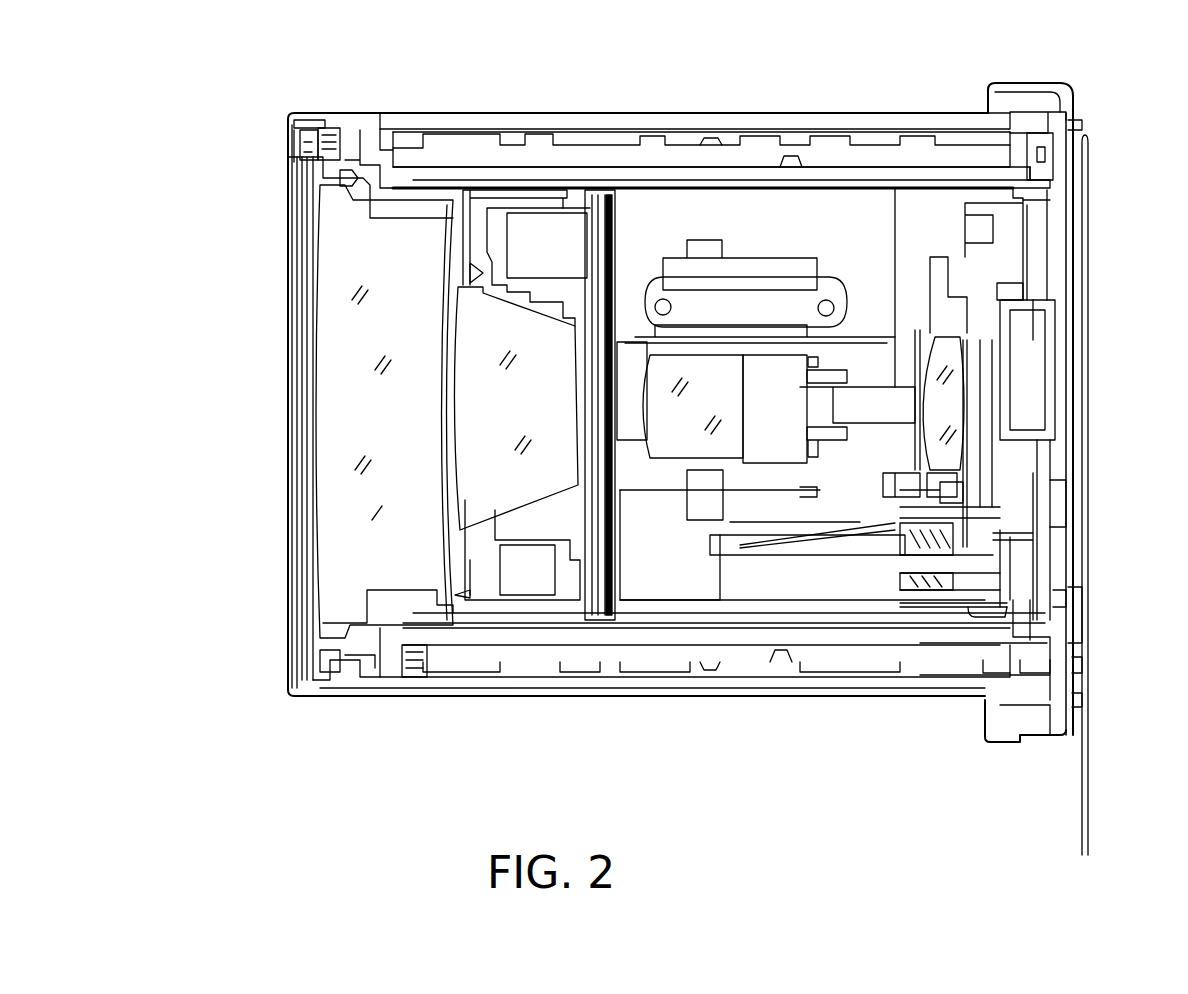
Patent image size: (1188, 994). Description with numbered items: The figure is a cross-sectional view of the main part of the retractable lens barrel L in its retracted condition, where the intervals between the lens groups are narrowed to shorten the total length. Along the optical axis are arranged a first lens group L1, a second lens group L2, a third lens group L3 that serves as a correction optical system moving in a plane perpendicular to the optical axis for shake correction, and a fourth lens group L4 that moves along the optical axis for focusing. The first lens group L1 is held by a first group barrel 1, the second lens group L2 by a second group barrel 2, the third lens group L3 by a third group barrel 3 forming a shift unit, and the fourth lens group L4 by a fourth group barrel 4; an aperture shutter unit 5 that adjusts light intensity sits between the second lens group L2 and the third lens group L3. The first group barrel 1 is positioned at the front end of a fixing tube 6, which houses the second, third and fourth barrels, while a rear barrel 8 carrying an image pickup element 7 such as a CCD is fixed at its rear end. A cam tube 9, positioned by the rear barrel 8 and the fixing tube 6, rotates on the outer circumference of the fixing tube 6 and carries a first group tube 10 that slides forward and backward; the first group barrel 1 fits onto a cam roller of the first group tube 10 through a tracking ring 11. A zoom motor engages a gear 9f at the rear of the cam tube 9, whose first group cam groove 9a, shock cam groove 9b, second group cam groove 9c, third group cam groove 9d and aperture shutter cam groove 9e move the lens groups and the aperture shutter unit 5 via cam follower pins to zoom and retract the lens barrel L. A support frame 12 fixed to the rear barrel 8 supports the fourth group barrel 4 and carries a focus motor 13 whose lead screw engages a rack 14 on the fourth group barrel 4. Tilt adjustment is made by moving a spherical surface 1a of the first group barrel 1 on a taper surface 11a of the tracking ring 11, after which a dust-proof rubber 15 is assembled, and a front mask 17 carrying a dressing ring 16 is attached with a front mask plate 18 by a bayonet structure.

The first group barrel 1 is at (346, 645).
The spherical surface 1a is at (345, 176).
The second group barrel 2 is at (487, 205).
The third group barrel 3 is at (695, 345).
The fourth group barrel 4 is at (896, 525).
The aperture shutter unit 5 is at (598, 220).
The fixing tube 6 is at (556, 176).
The image pickup element 7 is at (1022, 392).
The rear barrel 8 is at (1058, 163).
The cam tube 9 is at (413, 148).
The first group cam groove 9a is at (707, 140).
The shock cam groove 9b is at (708, 672).
The second group cam groove 9c is at (530, 500).
The third group cam groove 9d is at (790, 158).
The aperture shutter cam groove 9e is at (781, 652).
The gear 9f is at (1020, 114).
The first group tube 10 is at (449, 112).
The tracking ring 11 is at (365, 660).
The taper surface 11a is at (412, 676).
The support frame 12 is at (1010, 240).
The focus motor 13 is at (668, 590).
The rack 14 is at (912, 592).
The dust-proof rubber 15 is at (322, 132).
The dressing ring 16 is at (308, 112).
The front mask 17 is at (300, 155).
The front mask plate 18 is at (300, 140).
The lens barrel L is at (901, 92).
The first lens group L1 is at (330, 393).
The second lens group L2 is at (556, 500).
The third lens group L3 is at (686, 430).
The fourth lens group L4 is at (940, 455).